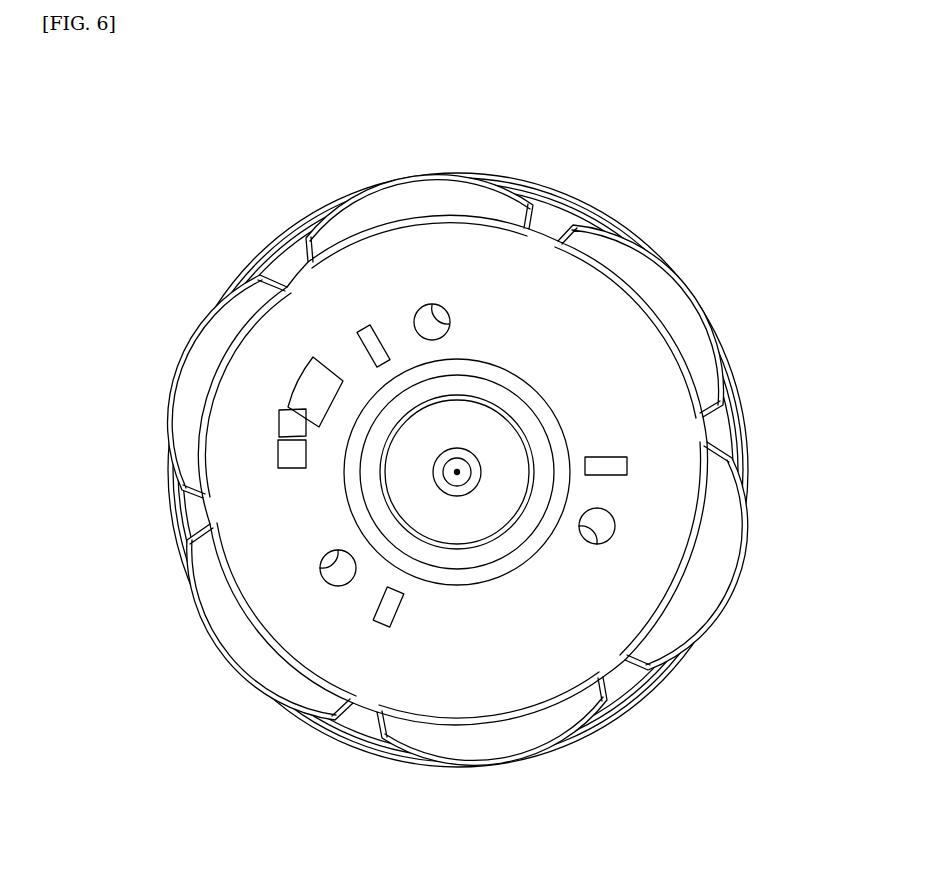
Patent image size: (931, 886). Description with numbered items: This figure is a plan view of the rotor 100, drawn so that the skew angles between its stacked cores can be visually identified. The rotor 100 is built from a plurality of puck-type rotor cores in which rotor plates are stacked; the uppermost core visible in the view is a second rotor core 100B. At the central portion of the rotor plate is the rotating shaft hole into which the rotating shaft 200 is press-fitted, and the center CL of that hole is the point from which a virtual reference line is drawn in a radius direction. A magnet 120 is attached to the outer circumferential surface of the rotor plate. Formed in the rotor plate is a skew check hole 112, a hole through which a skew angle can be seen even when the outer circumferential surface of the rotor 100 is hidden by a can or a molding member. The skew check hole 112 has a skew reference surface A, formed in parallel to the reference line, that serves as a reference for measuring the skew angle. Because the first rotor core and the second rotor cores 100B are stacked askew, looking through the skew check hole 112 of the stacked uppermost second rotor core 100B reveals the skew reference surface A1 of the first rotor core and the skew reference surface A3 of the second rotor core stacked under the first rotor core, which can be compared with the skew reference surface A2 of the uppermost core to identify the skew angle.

The rotor 100 is at (557, 160).
The second rotor core 100B is at (596, 318).
The magnet 120 is at (678, 316).
The rotating shaft 200 is at (478, 517).
The center of the rotating shaft hole CL is at (457, 472).
The skew check hole 112 is at (300, 373).
The skew reference surface A is at (80, 322).
The skew reference surface of the first rotor core A1 is at (276, 423).
The skew reference surface of the stacked uppermost second rotor core A2 is at (276, 458).
The skew reference surface of the second rotor core stacked under the first rotor co A3 is at (288, 380).